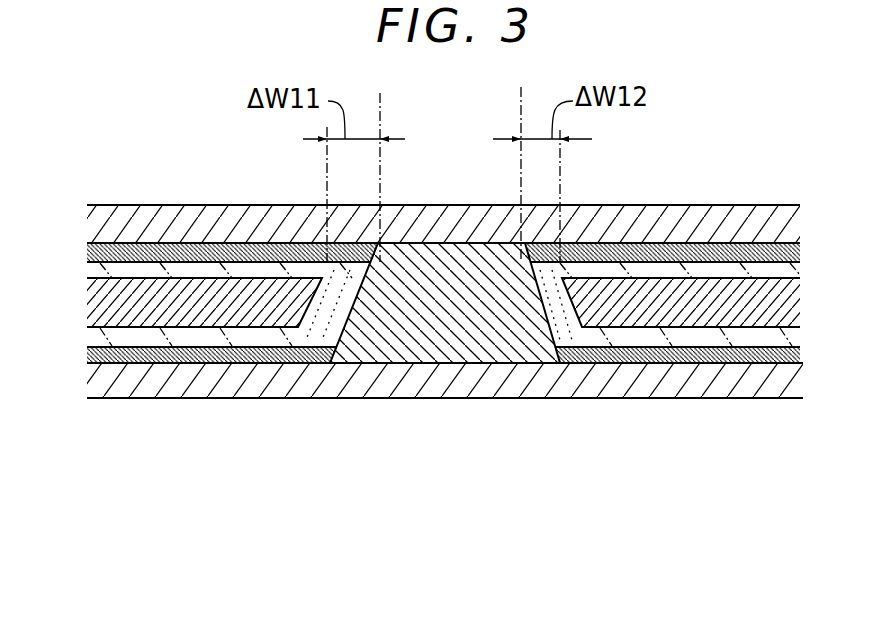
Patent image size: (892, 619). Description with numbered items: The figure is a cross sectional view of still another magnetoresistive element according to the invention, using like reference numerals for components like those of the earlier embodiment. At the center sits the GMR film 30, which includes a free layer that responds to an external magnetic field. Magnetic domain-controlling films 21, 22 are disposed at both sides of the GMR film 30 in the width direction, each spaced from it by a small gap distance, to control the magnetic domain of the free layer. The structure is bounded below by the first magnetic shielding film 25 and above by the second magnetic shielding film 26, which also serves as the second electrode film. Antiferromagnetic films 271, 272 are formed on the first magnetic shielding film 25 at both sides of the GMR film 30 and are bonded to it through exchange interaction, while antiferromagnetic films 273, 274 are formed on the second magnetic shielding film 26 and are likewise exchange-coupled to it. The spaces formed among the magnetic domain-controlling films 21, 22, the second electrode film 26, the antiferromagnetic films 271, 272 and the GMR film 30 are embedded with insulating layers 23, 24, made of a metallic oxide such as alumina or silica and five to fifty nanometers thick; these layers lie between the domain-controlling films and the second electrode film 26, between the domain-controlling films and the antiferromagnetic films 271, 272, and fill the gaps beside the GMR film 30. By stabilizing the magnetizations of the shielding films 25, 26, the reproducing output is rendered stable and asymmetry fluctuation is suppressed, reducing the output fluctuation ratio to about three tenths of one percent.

The magnetic domain-controlling film 21 is at (270, 305).
The magnetic domain-controlling film 22 is at (718, 305).
The insulating layer 23 is at (213, 337).
The insulating layer 24 is at (660, 337).
The first magnetic shielding film 25 is at (170, 383).
The second magnetic shielding film 26 is at (221, 223).
The GMR film 30 is at (433, 262).
The antiferromagnetic film 271 is at (100, 358).
The antiferromagnetic film 272 is at (760, 355).
The antiferromagnetic film 273 is at (103, 243).
The antiferromagnetic film 274 is at (737, 243).